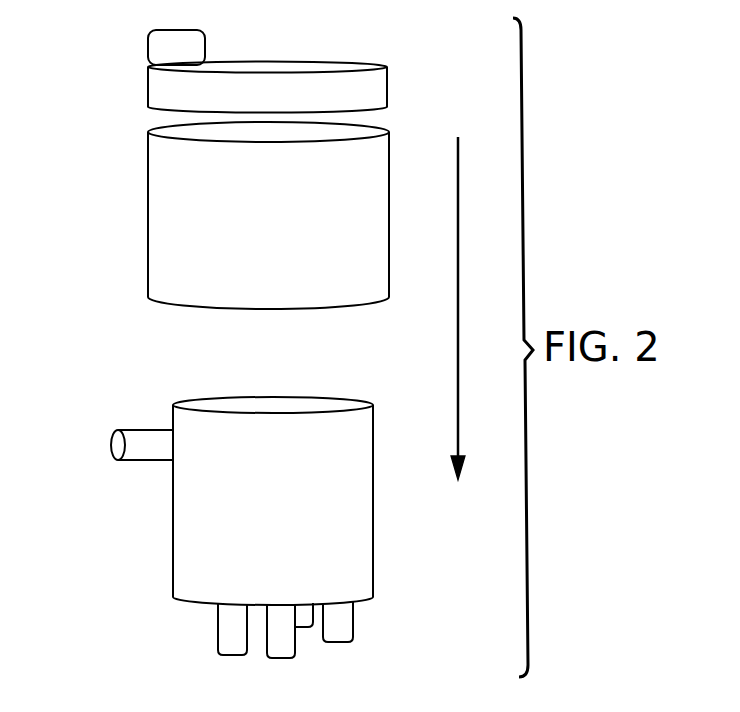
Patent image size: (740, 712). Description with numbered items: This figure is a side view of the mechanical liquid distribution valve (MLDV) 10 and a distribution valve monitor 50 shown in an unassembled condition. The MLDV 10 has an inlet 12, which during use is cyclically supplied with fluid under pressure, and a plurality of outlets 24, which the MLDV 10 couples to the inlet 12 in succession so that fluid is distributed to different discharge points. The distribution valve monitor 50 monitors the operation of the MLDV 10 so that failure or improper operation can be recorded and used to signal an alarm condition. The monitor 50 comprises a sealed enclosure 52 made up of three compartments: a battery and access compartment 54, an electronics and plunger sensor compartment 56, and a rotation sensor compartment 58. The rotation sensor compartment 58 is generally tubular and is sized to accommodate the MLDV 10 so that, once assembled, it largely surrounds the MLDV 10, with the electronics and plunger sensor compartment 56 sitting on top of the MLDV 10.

The mechanical liquid distribution valve 10 is at (229, 531).
The inlet 12 is at (130, 437).
The outlets 24 is at (233, 640).
The distribution valve monitor 50 is at (254, 177).
The sealed enclosure 52 is at (257, 202).
The battery and access compartment 54 is at (205, 50).
The electronics and plunger sensor compartment 56 is at (318, 60).
The rotation sensor compartment 58 is at (400, 162).